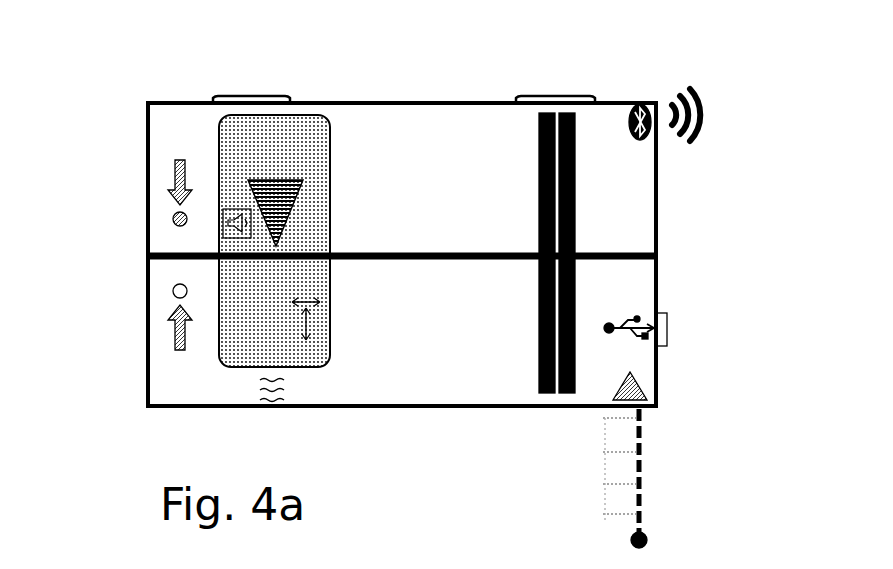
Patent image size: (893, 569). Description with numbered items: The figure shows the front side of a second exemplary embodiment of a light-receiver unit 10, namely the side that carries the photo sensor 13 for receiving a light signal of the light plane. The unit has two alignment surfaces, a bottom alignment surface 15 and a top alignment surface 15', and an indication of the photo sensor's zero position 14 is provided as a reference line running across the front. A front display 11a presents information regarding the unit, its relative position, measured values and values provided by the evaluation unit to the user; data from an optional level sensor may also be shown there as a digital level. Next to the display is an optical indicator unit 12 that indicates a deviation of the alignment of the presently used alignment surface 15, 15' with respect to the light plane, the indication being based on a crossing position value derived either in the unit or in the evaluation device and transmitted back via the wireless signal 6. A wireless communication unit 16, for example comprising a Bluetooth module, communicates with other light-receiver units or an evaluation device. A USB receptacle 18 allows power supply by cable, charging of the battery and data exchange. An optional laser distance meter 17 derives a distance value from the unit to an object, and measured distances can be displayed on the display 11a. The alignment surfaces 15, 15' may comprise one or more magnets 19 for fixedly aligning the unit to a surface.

The light-receiver unit 10 is at (514, 42).
The front display 11a is at (313, 129).
The optical indicator unit 12 is at (177, 186).
The photo sensor 13 is at (578, 193).
The zero position 14 is at (608, 255).
The bottom alignment surface 15 is at (435, 369).
The top alignment surface 15' is at (415, 131).
The wireless communication unit 16 is at (657, 101).
The laser distance meter 17 is at (662, 431).
The USB receptacle 18 is at (668, 325).
The magnet 19 is at (224, 117).
The wireless signal 6 is at (720, 93).